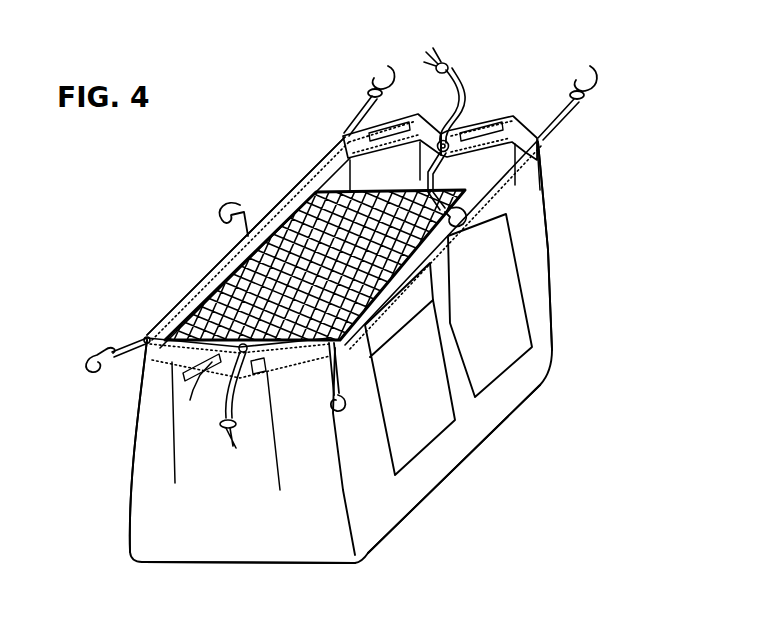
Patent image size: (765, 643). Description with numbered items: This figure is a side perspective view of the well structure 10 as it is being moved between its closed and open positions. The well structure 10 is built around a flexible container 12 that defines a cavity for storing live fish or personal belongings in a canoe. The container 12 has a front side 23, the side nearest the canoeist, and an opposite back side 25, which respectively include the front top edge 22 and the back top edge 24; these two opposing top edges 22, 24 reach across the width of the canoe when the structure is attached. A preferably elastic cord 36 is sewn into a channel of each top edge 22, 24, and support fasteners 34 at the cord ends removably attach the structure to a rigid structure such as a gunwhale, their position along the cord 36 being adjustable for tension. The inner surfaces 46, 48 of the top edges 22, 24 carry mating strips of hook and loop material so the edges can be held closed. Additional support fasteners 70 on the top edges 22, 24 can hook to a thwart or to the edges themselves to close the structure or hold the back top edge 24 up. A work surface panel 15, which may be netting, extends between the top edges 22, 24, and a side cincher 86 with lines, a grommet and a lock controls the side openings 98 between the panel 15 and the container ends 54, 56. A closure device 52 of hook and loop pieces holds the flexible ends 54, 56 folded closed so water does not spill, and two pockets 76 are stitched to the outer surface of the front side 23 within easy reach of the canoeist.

The well structure 10 is at (556, 266).
The flexible container 12 is at (213, 265).
The work surface panel 15 is at (312, 207).
The front top edge 22 is at (537, 162).
The front side 23 is at (387, 517).
The back top edge 24 is at (200, 281).
The back side 25 is at (129, 507).
The support fasteners 34 is at (384, 65).
The cord 36 is at (360, 120).
The inner surface of front top edge 46 is at (498, 186).
The inner surface of back top edge 48 is at (320, 160).
The closure device 52 is at (211, 396).
The container end 54 is at (223, 535).
The container end 56 is at (498, 117).
The additional support fasteners 70 is at (223, 205).
The pocket 76 is at (433, 422).
The side cincher 86 is at (465, 97).
The side openings 98 is at (145, 332).